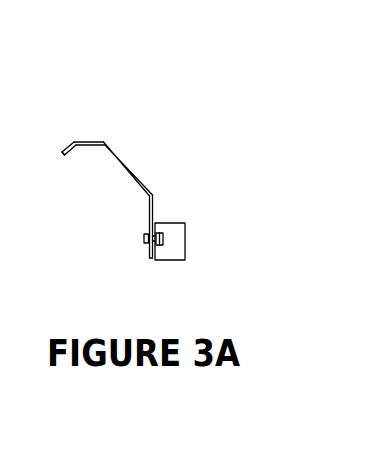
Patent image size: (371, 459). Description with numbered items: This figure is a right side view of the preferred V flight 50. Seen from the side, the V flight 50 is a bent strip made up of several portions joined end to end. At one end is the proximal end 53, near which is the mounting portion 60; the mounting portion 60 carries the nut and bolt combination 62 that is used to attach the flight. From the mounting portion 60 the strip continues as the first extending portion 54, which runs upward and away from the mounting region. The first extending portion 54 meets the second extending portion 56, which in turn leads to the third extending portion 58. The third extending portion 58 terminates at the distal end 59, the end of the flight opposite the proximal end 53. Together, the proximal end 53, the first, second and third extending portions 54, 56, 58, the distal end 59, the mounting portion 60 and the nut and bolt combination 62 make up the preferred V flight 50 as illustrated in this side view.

The V flight 50 is at (165, 200).
The proximal end 53 is at (148, 264).
The first extending portion 54 is at (137, 172).
The second extending portion 56 is at (96, 142).
The third extending portion 58 is at (64, 150).
The distal end 59 is at (61, 162).
The mounting portion 60 is at (149, 215).
The nut and bolt combination 62 is at (163, 239).